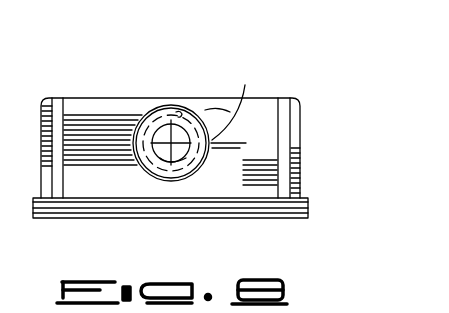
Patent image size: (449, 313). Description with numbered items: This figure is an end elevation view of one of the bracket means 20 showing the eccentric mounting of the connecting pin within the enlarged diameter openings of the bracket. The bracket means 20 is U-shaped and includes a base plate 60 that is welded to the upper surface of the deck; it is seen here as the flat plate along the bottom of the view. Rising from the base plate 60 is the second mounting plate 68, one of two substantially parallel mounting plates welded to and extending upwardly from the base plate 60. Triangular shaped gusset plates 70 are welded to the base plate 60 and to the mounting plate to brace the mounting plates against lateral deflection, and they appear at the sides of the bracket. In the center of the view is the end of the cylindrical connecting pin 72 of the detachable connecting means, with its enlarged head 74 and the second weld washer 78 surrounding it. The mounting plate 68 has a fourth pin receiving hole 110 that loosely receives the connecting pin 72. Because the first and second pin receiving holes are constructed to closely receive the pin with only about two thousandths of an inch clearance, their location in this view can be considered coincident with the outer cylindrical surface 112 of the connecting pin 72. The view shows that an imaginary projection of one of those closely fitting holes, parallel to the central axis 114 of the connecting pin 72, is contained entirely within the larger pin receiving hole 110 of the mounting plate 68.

The bracket means 20 is at (241, 83).
The base plate 60 is at (157, 213).
The second mounting plate 68 is at (230, 112).
The gusset plate 70 is at (58, 151).
The cylindrical connecting pin 72 is at (183, 150).
The enlarged head 74 is at (165, 173).
The second weld washer 78 is at (152, 110).
The fourth pin receiving hole 110 is at (184, 106).
The outer cylindrical surface 112 is at (249, 86).
The central axis 114 is at (171, 143).